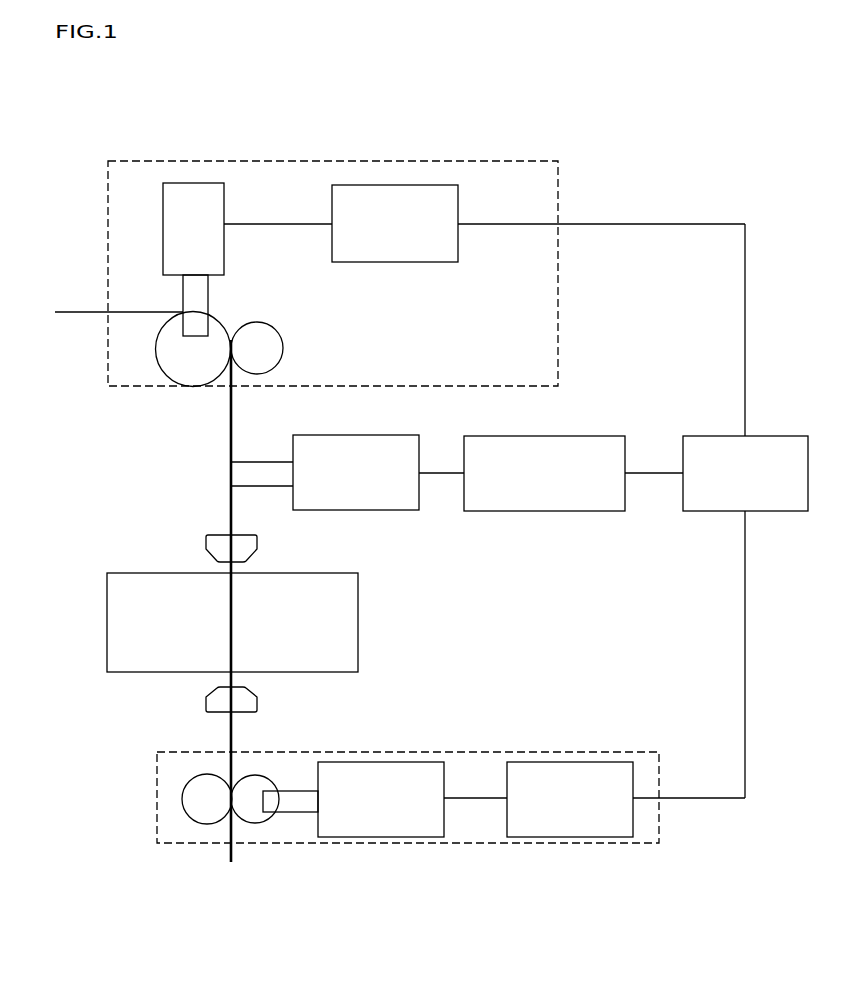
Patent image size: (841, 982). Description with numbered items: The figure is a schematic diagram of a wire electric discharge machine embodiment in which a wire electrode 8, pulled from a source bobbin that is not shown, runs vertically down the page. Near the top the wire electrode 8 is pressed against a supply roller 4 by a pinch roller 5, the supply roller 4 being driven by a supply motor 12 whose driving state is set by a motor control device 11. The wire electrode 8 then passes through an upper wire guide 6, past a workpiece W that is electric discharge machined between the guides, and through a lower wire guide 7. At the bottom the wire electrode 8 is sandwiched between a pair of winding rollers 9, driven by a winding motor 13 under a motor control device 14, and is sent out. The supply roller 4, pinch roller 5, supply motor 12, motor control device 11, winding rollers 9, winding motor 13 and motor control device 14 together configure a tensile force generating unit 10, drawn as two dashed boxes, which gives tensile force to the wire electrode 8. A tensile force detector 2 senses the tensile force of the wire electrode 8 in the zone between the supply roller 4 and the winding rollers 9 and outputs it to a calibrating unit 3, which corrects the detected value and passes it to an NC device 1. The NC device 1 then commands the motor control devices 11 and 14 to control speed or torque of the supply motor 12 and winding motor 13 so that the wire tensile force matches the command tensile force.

The NC device 1 is at (735, 436).
The tensile force detector 2 is at (330, 510).
The calibrating unit 3 is at (532, 511).
The supply roller 4 is at (169, 359).
The pinch roller 5 is at (283, 350).
The upper wire guide 6 is at (212, 535).
The lower wire guide 7 is at (255, 694).
The wire electrode 8 is at (231, 728).
The winding rollers 9 is at (253, 822).
The tensile force generating unit 10 is at (555, 752).
The motor control device 11 is at (397, 185).
The supply motor 12 is at (180, 183).
The winding motor 13 is at (350, 837).
The motor control device 14 is at (545, 838).
The workpiece W is at (358, 625).